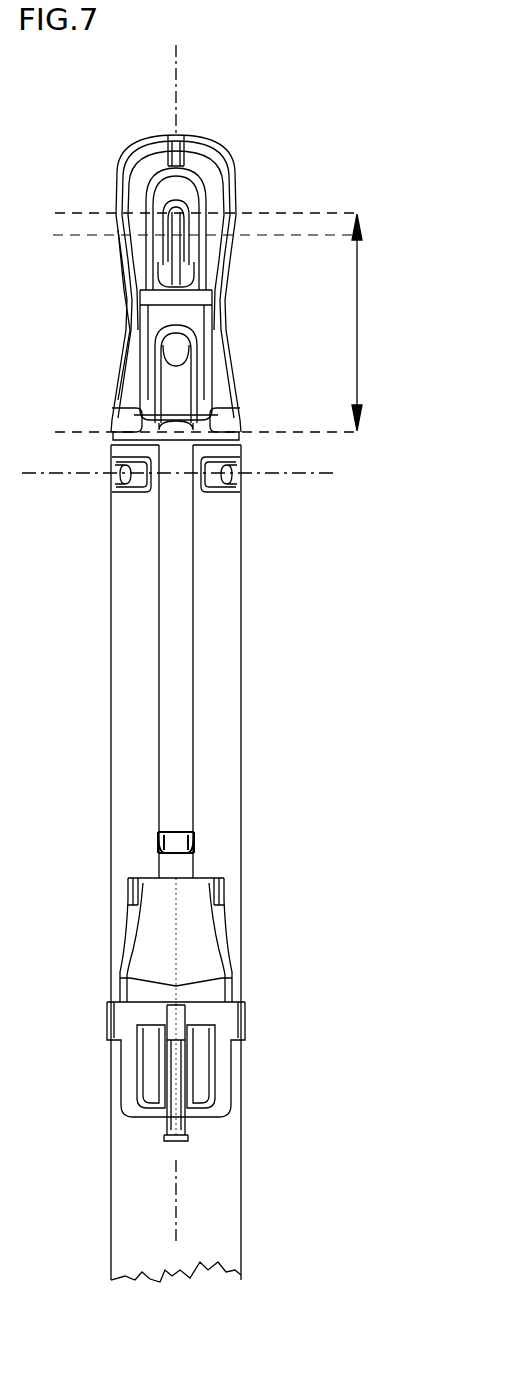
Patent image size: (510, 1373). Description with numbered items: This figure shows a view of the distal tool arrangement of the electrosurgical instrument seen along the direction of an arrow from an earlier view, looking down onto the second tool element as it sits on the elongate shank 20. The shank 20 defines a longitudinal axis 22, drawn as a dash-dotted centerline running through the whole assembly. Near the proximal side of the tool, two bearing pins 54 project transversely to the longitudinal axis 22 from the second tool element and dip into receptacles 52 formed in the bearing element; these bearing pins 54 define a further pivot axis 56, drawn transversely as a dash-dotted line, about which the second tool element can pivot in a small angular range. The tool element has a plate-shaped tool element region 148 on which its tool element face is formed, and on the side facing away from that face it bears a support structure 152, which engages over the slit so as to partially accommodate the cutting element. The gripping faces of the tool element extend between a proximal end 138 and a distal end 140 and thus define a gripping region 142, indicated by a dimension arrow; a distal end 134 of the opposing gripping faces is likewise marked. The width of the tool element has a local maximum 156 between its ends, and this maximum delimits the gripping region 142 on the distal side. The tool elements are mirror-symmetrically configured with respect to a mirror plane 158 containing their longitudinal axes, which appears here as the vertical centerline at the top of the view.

The mirror plane 158 is at (182, 48).
The support structure 152 is at (155, 185).
The plate-shaped tool element region 148 is at (197, 163).
The distal end 140 is at (230, 212).
The distal end 134 is at (120, 235).
The local maximum 156 is at (236, 247).
The gripping region 142 is at (357, 352).
The proximal end 138 is at (245, 425).
The bearing pin 54 is at (112, 468).
The pivot axis 56 is at (68, 472).
The receptacle 52 is at (110, 480).
The longitudinal axis 22 is at (177, 1173).
The elongate shank 20 is at (153, 1216).